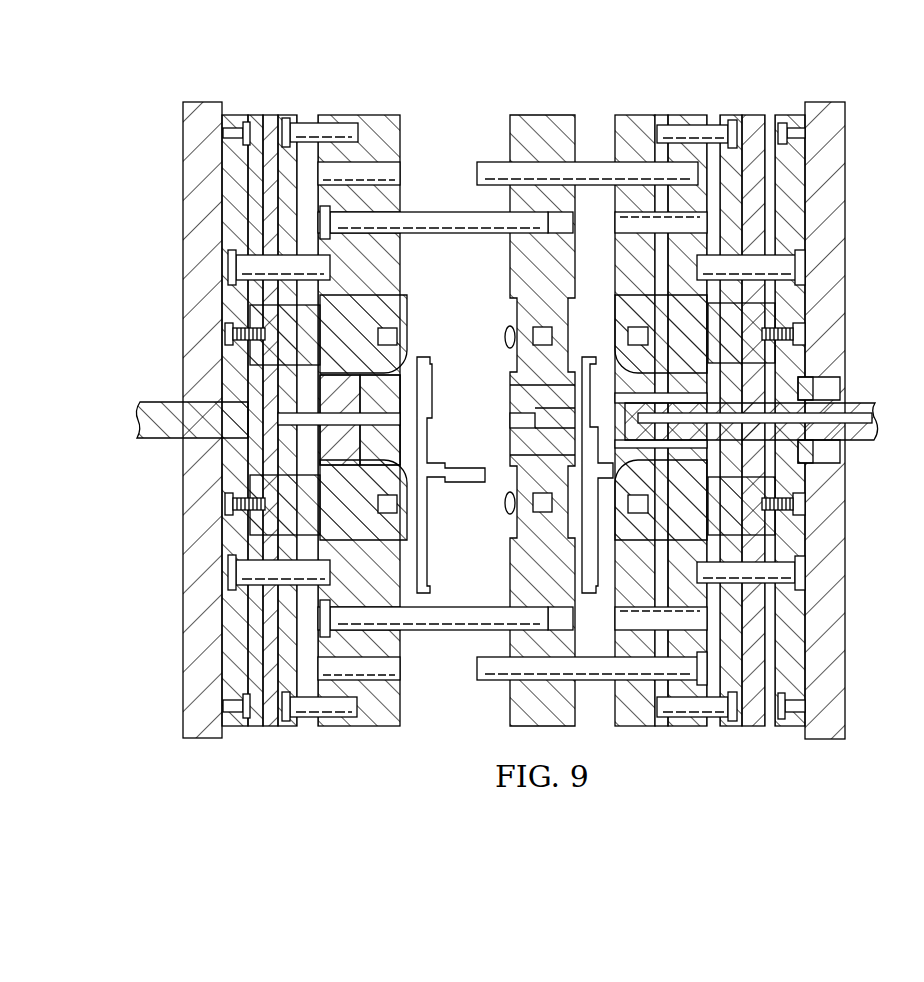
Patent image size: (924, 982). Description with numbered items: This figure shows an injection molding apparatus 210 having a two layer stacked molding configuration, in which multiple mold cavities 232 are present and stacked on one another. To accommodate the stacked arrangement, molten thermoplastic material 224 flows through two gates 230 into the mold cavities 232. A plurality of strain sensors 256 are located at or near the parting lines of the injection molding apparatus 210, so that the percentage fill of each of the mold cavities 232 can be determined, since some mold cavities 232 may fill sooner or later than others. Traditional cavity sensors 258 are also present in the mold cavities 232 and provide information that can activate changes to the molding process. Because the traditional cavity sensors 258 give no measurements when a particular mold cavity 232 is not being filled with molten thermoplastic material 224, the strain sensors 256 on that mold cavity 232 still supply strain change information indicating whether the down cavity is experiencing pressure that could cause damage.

The injection molding apparatus 210 is at (132, 247).
The molten thermoplastic material 224 is at (832, 408).
The gates 230 is at (625, 415).
The mold cavities 232 is at (473, 514).
The strain sensors 256 is at (510, 302).
The traditional cavity sensors 258 is at (505, 340).